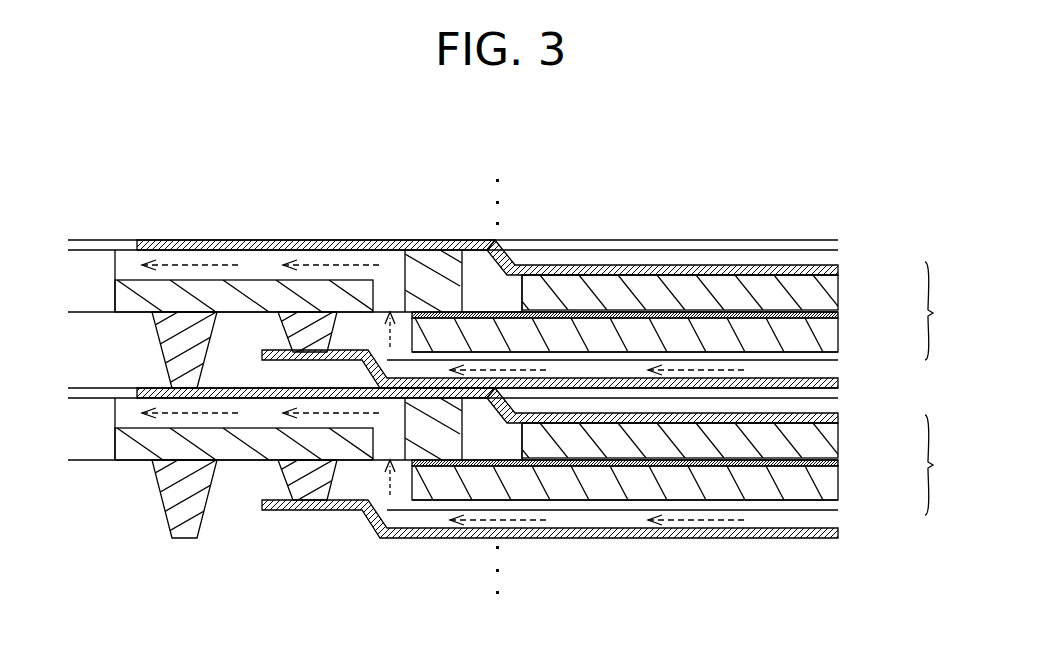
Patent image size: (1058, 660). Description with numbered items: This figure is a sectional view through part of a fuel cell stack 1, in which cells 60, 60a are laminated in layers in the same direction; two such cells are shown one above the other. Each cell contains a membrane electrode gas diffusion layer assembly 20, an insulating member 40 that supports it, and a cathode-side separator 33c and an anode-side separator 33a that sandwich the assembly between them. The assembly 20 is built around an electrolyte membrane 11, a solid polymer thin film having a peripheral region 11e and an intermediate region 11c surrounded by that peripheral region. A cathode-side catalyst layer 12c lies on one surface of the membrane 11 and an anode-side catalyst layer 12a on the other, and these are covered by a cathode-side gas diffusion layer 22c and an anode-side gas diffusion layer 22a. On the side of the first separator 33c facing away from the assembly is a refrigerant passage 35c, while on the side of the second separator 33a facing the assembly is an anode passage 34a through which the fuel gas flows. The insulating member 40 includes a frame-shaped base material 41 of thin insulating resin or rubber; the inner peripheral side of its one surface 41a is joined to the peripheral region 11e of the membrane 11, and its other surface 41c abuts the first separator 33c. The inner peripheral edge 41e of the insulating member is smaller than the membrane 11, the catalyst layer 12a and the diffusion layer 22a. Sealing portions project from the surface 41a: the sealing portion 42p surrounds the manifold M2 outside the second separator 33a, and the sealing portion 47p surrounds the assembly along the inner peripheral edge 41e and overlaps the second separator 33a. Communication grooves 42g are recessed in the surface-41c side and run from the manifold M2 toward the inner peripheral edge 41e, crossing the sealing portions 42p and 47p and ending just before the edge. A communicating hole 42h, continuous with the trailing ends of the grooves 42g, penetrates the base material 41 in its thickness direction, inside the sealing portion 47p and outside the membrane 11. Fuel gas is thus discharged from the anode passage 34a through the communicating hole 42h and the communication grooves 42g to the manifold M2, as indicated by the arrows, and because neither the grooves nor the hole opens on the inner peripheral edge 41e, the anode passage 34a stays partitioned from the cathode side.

The fuel cell stack 1 is at (828, 174).
The electrolyte membrane 11 is at (840, 315).
The intermediate region 11c is at (561, 310).
The peripheral region 11e is at (447, 290).
The anode-side catalyst layer 12a is at (838, 318).
The cathode-side catalyst layer 12c is at (838, 306).
The membrane electrode gas diffusion layer assembly 20 is at (944, 388).
The anode-side gas diffusion layer 22a is at (838, 349).
The cathode-side gas diffusion layer 22c is at (830, 287).
The anode-side separator 33a is at (842, 386).
The cathode-side separator 33c is at (840, 242).
The anode passage 34a is at (826, 368).
The refrigerant passage 35c is at (603, 263).
The insulating member 40 is at (115, 313).
The base material 41 is at (140, 300).
The one surface 41a is at (281, 318).
The other surface 41c is at (213, 244).
The inner peripheral edge 41e is at (462, 290).
The communication grooves 42g is at (347, 257).
The communicating hole 42h is at (394, 280).
The sealing portion 42p is at (208, 338).
The sealing portion 47p is at (335, 333).
The cell 60 is at (849, 216).
The cell 60a is at (860, 538).
The manifold M2 is at (76, 347).